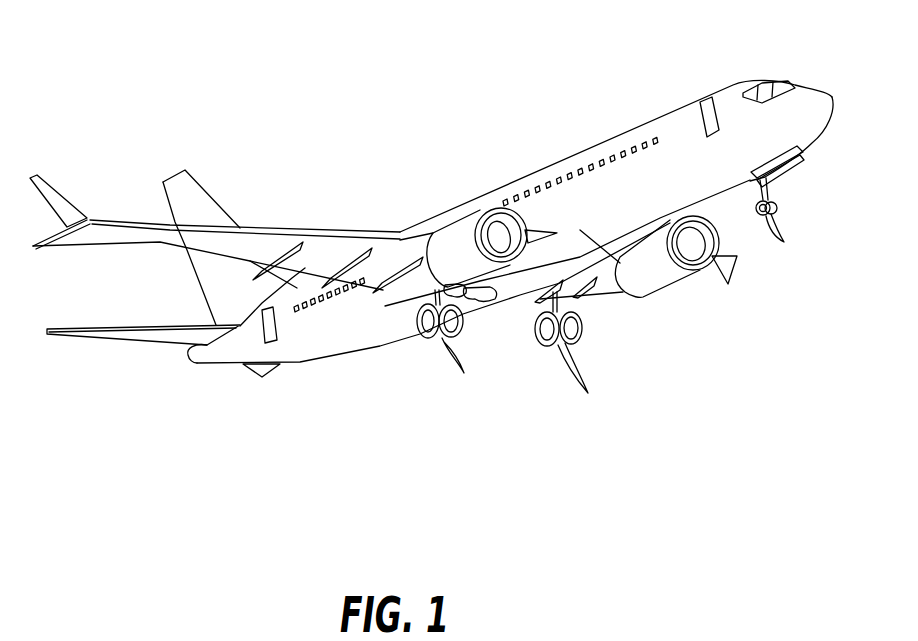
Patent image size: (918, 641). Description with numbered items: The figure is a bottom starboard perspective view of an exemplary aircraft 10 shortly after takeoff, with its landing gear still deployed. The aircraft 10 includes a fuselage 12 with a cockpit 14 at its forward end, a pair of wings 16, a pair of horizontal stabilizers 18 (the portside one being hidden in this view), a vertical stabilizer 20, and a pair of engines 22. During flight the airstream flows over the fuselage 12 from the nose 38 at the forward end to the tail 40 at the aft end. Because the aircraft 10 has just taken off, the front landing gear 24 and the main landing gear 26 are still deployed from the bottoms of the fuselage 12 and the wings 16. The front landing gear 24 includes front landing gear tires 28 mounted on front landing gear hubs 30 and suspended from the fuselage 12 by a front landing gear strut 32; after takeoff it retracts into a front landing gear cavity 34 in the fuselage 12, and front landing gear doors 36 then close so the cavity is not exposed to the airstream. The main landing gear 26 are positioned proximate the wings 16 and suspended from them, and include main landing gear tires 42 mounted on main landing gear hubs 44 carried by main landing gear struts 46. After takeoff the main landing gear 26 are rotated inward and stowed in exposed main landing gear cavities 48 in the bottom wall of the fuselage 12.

The aircraft 10 is at (272, 78).
The fuselage 12 is at (603, 147).
The cockpit 14 is at (758, 79).
The wings 16 is at (104, 221).
The horizontal stabilizers 18 is at (80, 328).
The vertical stabilizer 20 is at (173, 199).
The engines 22 is at (463, 247).
The front landing gear 24 is at (788, 210).
The main landing gear 26 is at (428, 350).
The front landing gear tires 28 is at (780, 234).
The front landing gear hubs 30 is at (756, 208).
The front landing gear strut 32 is at (777, 194).
The front landing gear cavity 34 is at (802, 150).
The front landing gear doors 36 is at (790, 170).
The nose 38 is at (828, 96).
The tail 40 is at (190, 357).
The main landing gear tires 42 is at (525, 378).
The main landing gear hubs 44 is at (418, 330).
The main landing gear struts 46 is at (433, 292).
The main landing gear cavities 48 is at (495, 300).